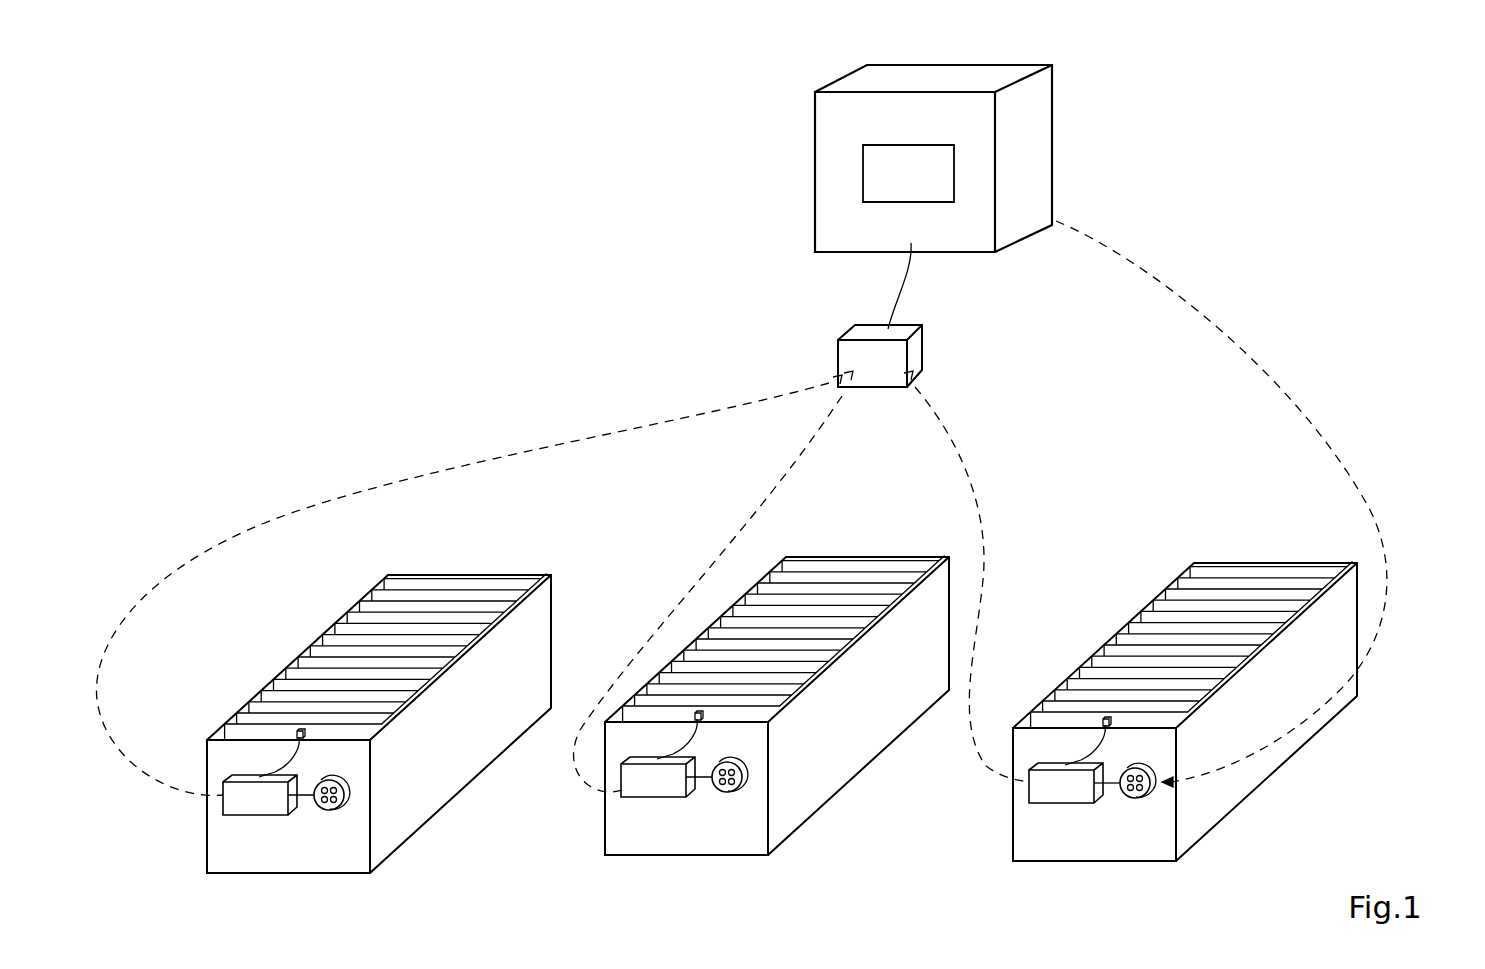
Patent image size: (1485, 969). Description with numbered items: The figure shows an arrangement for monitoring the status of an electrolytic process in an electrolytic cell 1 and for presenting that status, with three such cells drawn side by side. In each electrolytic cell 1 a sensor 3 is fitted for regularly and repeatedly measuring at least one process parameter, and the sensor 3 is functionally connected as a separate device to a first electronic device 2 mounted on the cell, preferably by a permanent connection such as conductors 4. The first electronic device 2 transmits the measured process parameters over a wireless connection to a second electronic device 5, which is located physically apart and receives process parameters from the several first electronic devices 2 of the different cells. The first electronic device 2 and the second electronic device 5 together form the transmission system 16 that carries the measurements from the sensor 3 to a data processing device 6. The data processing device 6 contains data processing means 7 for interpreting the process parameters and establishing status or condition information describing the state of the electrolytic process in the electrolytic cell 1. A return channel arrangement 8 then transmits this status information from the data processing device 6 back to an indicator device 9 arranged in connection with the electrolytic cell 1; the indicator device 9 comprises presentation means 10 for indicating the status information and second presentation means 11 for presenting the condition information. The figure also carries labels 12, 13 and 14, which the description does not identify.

The electrolytic cell 1 is at (1363, 675).
The first electronic device 2 is at (243, 807).
The sensor 3 is at (1100, 722).
The conductors 4 is at (1090, 748).
The second electronic device 5 is at (920, 350).
The data processing device 6 is at (1043, 175).
The data processing means 7 is at (954, 157).
The return channel arrangement 8 is at (1219, 325).
The indicator device 9 is at (350, 798).
The presentation means 10 is at (1147, 790).
The second presentation means 11 is at (1147, 793).
The connector contact 12 is at (1143, 795).
The connector cable 13 is at (1120, 783).
The data connection 14 is at (907, 283).
The transmission system 16 is at (485, 362).